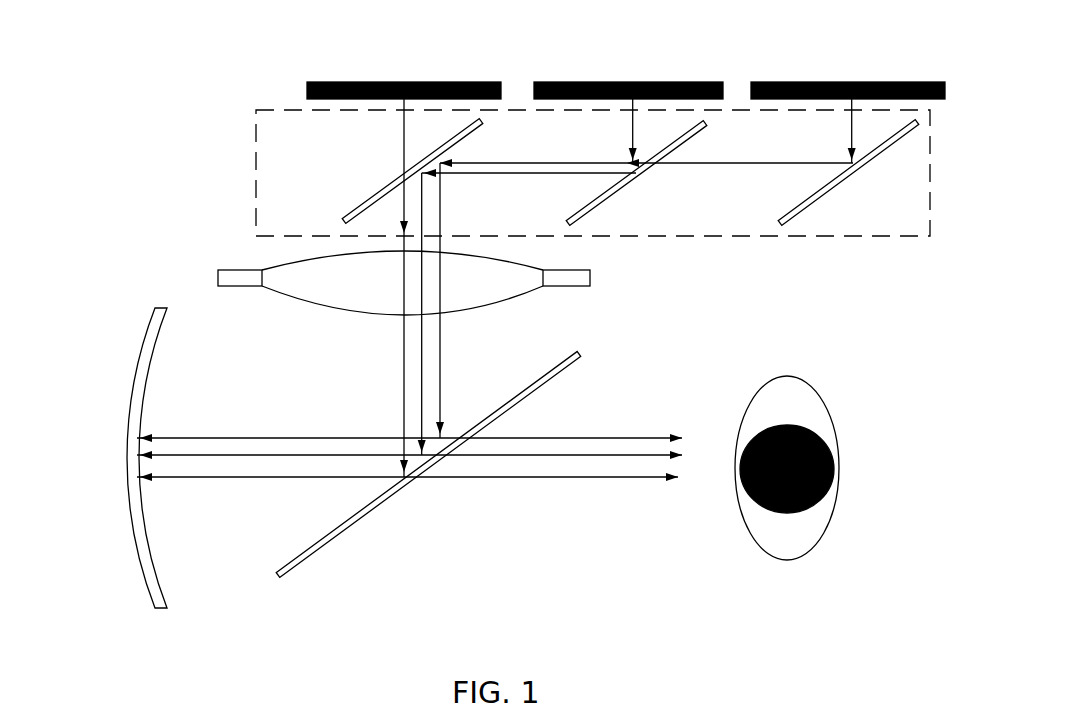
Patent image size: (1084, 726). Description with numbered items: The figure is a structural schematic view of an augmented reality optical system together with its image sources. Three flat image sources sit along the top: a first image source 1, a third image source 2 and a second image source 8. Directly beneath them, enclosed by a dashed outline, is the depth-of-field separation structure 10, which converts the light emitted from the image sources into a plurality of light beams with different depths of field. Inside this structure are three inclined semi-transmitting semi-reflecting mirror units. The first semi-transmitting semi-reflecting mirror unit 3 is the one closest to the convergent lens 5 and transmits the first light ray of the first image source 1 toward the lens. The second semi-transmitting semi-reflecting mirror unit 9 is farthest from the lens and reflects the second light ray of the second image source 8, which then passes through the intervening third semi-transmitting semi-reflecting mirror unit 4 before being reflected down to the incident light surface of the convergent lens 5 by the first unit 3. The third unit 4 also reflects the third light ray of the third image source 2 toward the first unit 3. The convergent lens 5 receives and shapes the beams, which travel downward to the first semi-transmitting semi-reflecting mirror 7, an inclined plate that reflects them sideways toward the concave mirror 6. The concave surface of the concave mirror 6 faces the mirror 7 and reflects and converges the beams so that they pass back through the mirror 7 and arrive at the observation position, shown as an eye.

The first image source 1 is at (342, 80).
The third image source 2 is at (578, 78).
The second image source 8 is at (805, 82).
The first semi-transmitting semi-reflecting mirror unit 3 is at (368, 193).
The third semi-transmitting semi-reflecting mirror unit 4 is at (596, 193).
The second semi-transmitting semi-reflecting mirror unit 9 is at (813, 192).
The depth-of-field separation structure 10 is at (255, 142).
The convergent lens 5 is at (257, 265).
The concave mirror 6 is at (148, 307).
The first semi-transmitting semi-reflecting mirror 7 is at (288, 555).